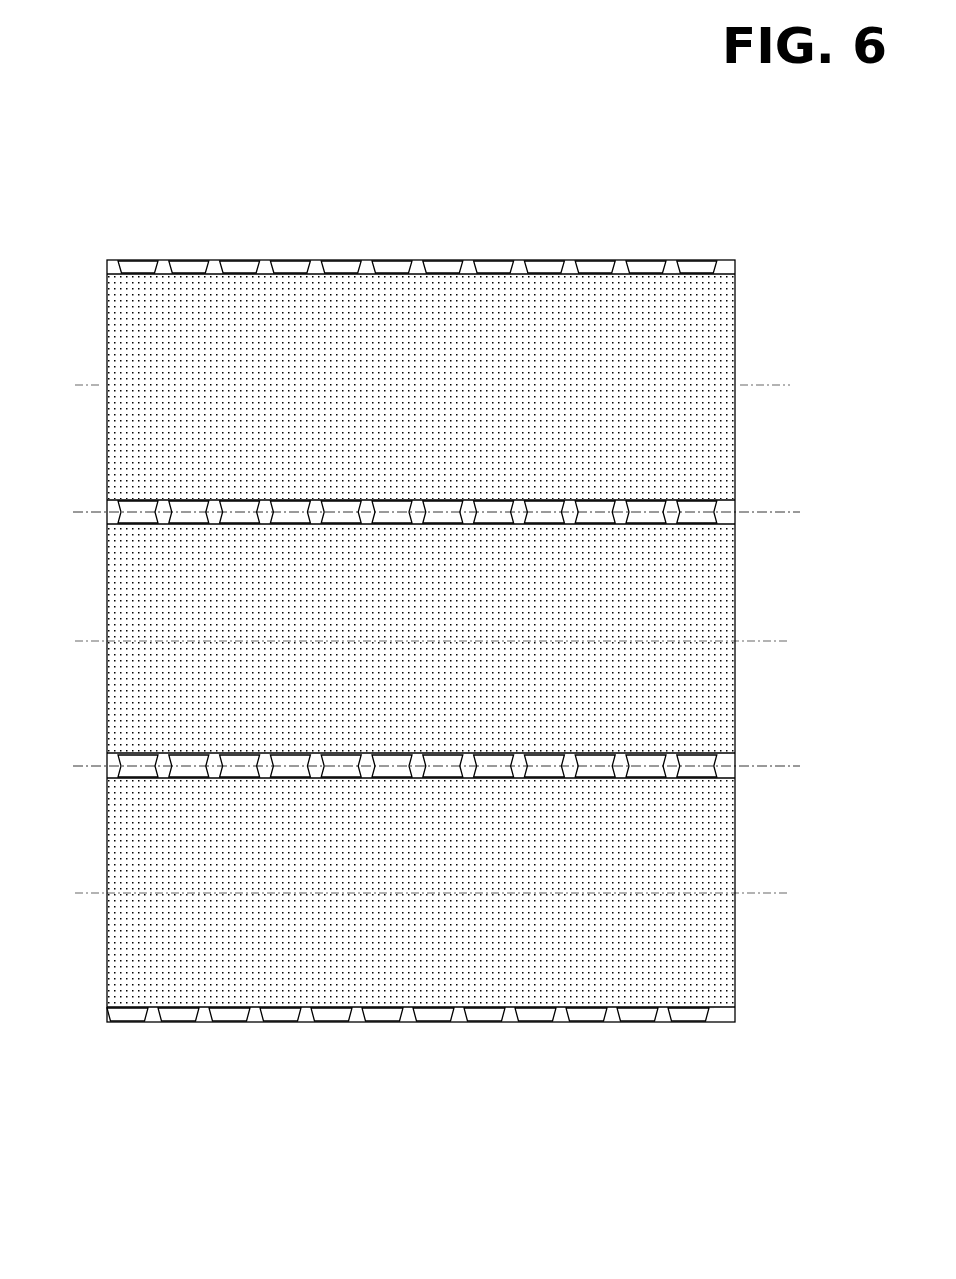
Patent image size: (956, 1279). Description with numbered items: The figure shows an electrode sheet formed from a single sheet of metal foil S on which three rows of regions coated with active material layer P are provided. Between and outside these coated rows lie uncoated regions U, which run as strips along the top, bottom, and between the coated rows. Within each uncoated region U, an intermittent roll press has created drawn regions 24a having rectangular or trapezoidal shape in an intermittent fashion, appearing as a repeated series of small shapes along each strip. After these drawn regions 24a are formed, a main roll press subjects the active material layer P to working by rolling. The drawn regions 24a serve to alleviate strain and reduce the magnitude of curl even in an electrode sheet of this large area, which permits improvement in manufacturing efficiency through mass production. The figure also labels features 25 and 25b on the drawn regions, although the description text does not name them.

The drawn region 24a is at (648, 268).
The protrusion 25 is at (573, 268).
The base of the protrusion 25b is at (700, 272).
The uncoated region U is at (735, 266).
The active material layer P is at (712, 427).
The metal foil S is at (752, 1126).